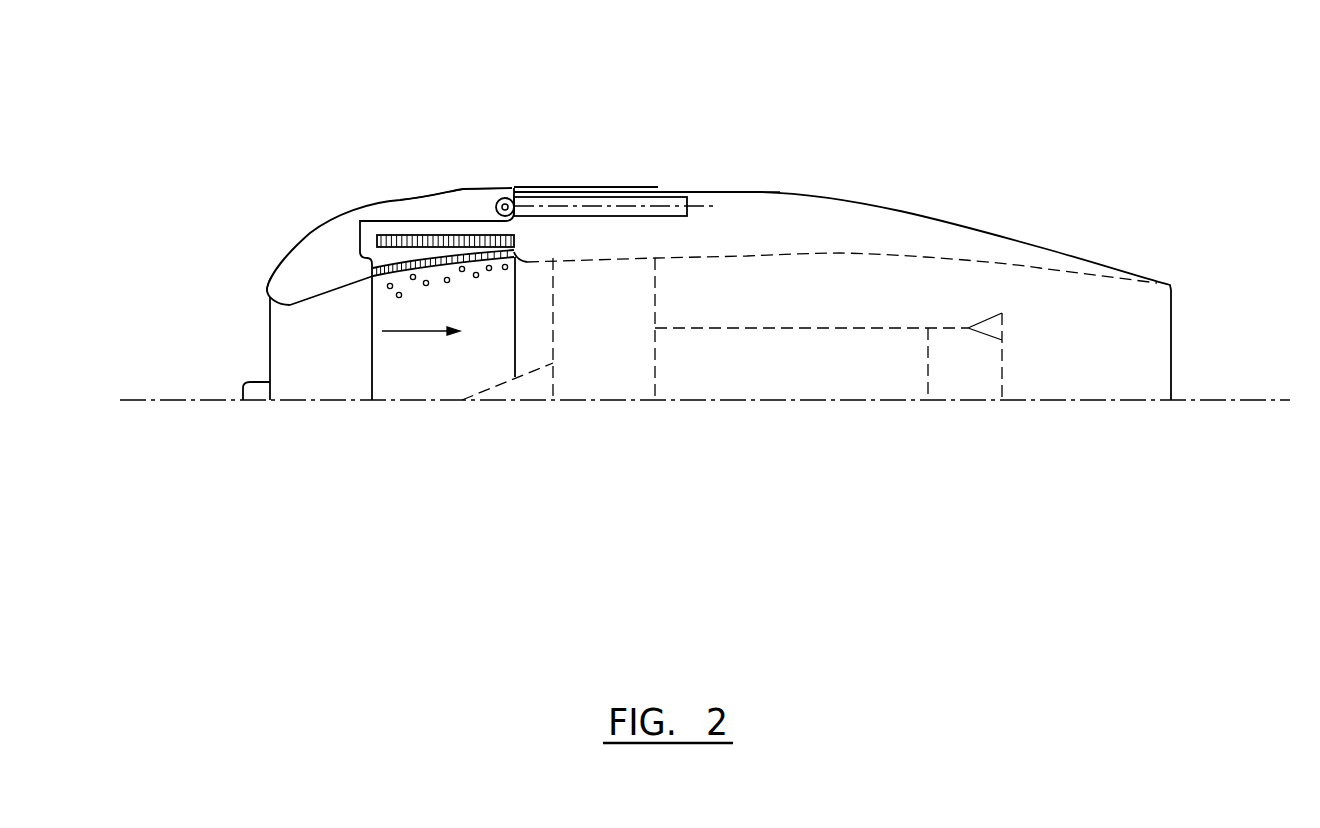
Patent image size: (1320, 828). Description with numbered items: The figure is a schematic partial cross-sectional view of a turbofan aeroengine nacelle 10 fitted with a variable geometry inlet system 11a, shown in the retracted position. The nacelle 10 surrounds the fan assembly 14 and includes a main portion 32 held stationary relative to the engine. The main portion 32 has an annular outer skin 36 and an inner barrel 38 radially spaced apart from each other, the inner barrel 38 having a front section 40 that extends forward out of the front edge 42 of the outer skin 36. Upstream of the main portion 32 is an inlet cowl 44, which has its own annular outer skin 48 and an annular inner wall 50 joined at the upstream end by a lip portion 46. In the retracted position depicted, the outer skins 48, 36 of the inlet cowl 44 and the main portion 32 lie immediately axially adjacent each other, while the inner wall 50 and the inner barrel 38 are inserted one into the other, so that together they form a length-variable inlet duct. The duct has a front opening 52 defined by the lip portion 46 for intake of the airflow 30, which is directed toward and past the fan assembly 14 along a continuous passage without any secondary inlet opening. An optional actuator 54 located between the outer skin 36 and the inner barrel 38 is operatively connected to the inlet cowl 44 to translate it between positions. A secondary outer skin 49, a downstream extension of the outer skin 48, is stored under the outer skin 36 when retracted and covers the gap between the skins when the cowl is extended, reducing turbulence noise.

The nacelle 10 is at (813, 193).
The variable geometry inlet system 11a is at (580, 70).
The fan assembly 14 is at (600, 378).
The airflow 30 is at (416, 334).
The main portion 32 is at (743, 192).
The annular outer skin 36 is at (673, 192).
The inner barrel 38 is at (527, 258).
The front section 40 is at (466, 232).
The front edge 42 is at (516, 192).
The inlet cowl 44 is at (335, 242).
The lip portion 46 is at (272, 279).
The annular outer skin 48 is at (450, 190).
The secondary outer skin 49 is at (640, 187).
The annular inner wall 50 is at (497, 254).
The front opening 52 is at (244, 402).
The actuator 54 is at (566, 196).